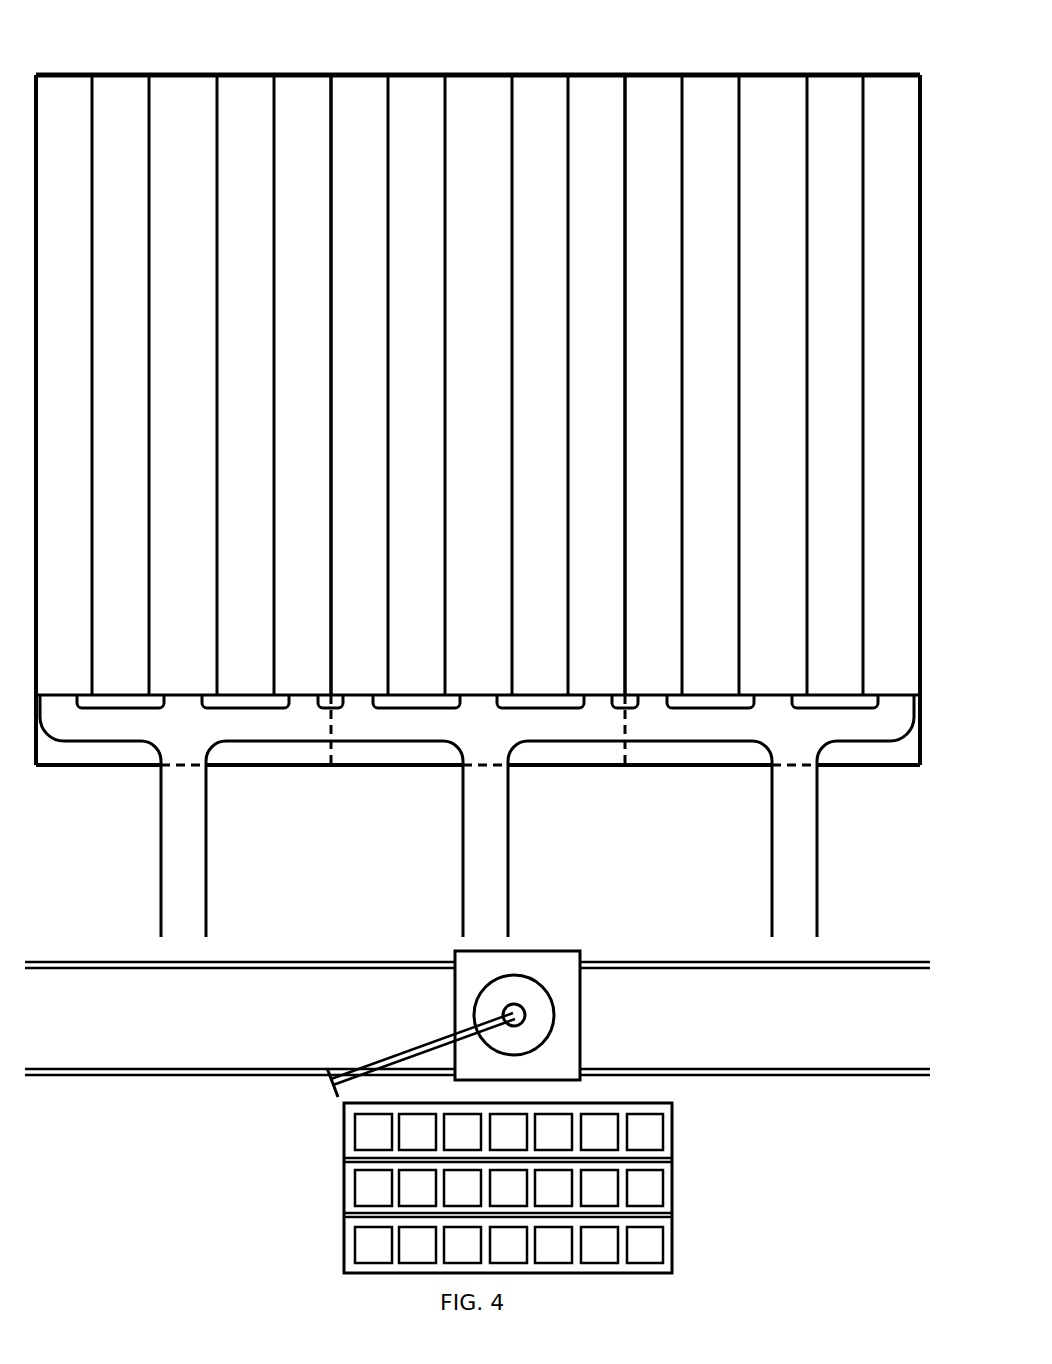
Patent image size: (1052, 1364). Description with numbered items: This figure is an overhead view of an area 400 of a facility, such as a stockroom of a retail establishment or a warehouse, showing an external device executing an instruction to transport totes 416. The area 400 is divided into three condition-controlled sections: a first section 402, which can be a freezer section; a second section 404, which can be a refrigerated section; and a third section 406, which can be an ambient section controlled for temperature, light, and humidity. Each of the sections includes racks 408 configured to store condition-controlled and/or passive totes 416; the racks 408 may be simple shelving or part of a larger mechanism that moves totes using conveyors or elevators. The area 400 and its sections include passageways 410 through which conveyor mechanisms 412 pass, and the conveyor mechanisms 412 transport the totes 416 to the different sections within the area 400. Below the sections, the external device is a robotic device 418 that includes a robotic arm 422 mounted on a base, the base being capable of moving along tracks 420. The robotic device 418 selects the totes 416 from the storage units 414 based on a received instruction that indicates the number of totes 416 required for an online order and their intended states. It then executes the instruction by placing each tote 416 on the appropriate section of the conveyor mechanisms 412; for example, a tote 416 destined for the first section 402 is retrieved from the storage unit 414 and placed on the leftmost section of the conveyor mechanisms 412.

The area 400 is at (84, 35).
The first section 402 is at (250, 72).
The second section 404 is at (549, 72).
The third section 406 is at (845, 72).
The racks 408 is at (93, 157).
The passageways 410 is at (331, 742).
The conveyor mechanisms 412 is at (770, 870).
The storage units 414 is at (344, 1243).
The totes 416 is at (344, 1190).
The robotic device 418 is at (455, 998).
The tracks 420 is at (652, 968).
The robotic arm 422 is at (385, 1057).